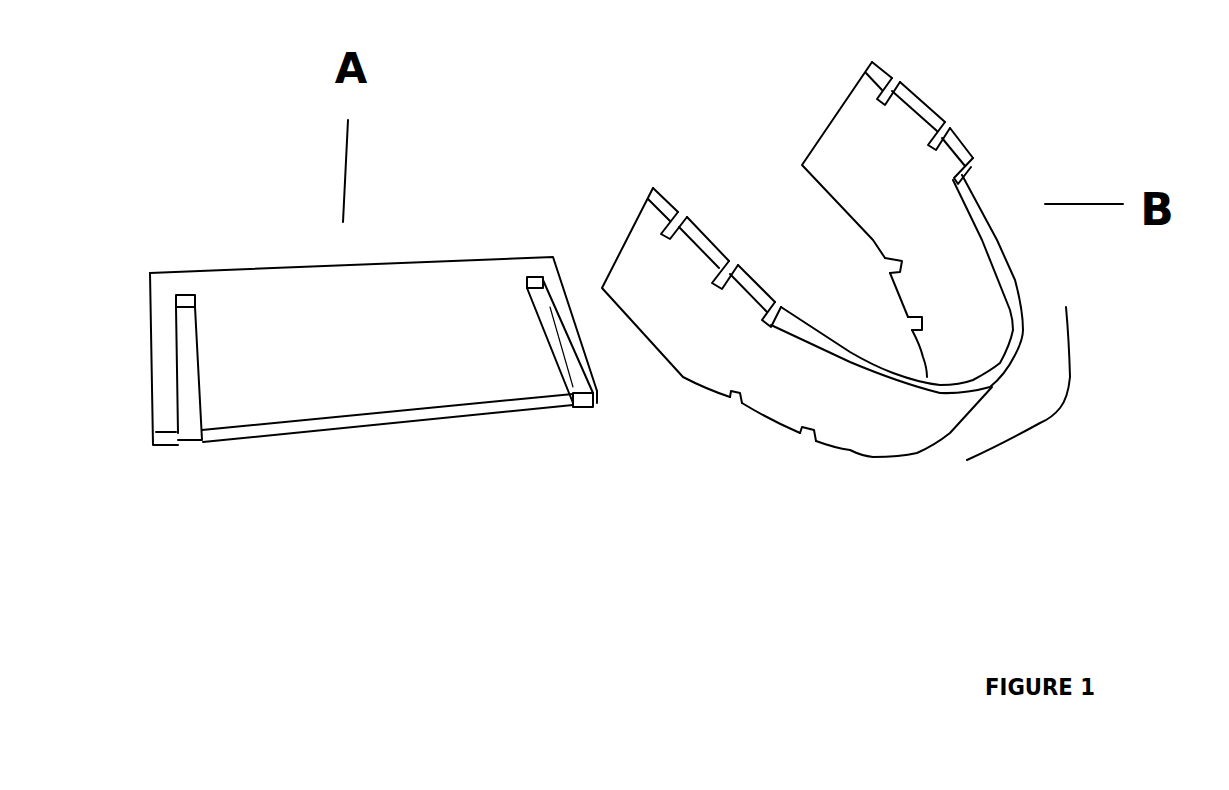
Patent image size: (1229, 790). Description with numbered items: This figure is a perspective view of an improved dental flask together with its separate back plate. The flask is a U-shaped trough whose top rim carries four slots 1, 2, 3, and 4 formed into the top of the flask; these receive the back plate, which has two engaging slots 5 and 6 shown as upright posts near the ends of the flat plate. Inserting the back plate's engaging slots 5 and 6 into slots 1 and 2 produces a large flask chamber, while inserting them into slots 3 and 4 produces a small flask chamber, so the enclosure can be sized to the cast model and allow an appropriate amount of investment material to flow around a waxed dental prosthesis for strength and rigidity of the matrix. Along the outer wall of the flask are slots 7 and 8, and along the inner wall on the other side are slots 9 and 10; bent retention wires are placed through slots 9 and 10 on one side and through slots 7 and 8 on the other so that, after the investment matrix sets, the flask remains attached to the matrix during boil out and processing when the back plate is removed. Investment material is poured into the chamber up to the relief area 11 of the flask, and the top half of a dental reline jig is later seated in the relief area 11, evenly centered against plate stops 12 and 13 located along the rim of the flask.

The slot 1 is at (687, 205).
The slot 2 is at (902, 78).
The slot 3 is at (738, 262).
The slot 4 is at (950, 122).
The engaging slot 5 is at (195, 448).
The engaging slot 6 is at (568, 418).
The slot 7 is at (732, 413).
The slot 8 is at (802, 455).
The slot 9 is at (883, 270).
The slot 10 is at (902, 323).
The relief area 11 is at (1060, 407).
The plate stop 12 is at (782, 307).
The plate stop 13 is at (977, 175).